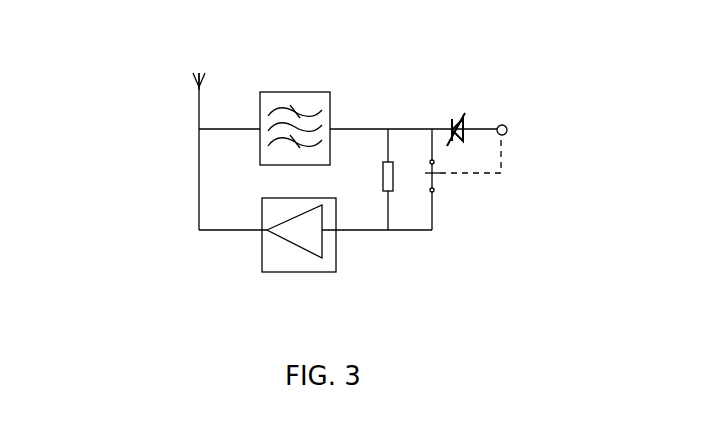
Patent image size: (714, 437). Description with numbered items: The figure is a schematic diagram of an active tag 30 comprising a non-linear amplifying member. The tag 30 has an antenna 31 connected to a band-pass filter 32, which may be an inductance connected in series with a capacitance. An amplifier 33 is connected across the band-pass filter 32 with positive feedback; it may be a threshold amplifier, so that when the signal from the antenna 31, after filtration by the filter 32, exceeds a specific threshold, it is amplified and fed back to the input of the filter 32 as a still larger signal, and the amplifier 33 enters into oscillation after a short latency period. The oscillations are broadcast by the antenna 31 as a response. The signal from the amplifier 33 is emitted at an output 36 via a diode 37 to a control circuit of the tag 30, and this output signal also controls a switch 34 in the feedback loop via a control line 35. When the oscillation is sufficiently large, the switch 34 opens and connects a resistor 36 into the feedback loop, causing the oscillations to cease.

The tag 30 is at (162, 189).
The antenna 31 is at (199, 100).
The band-pass filter 32 is at (307, 92).
The amplifier 33 is at (290, 247).
The switch 34 is at (437, 175).
The control line 35 is at (503, 152).
The output / resistor 36 is at (383, 181).
The diode 37 is at (452, 117).